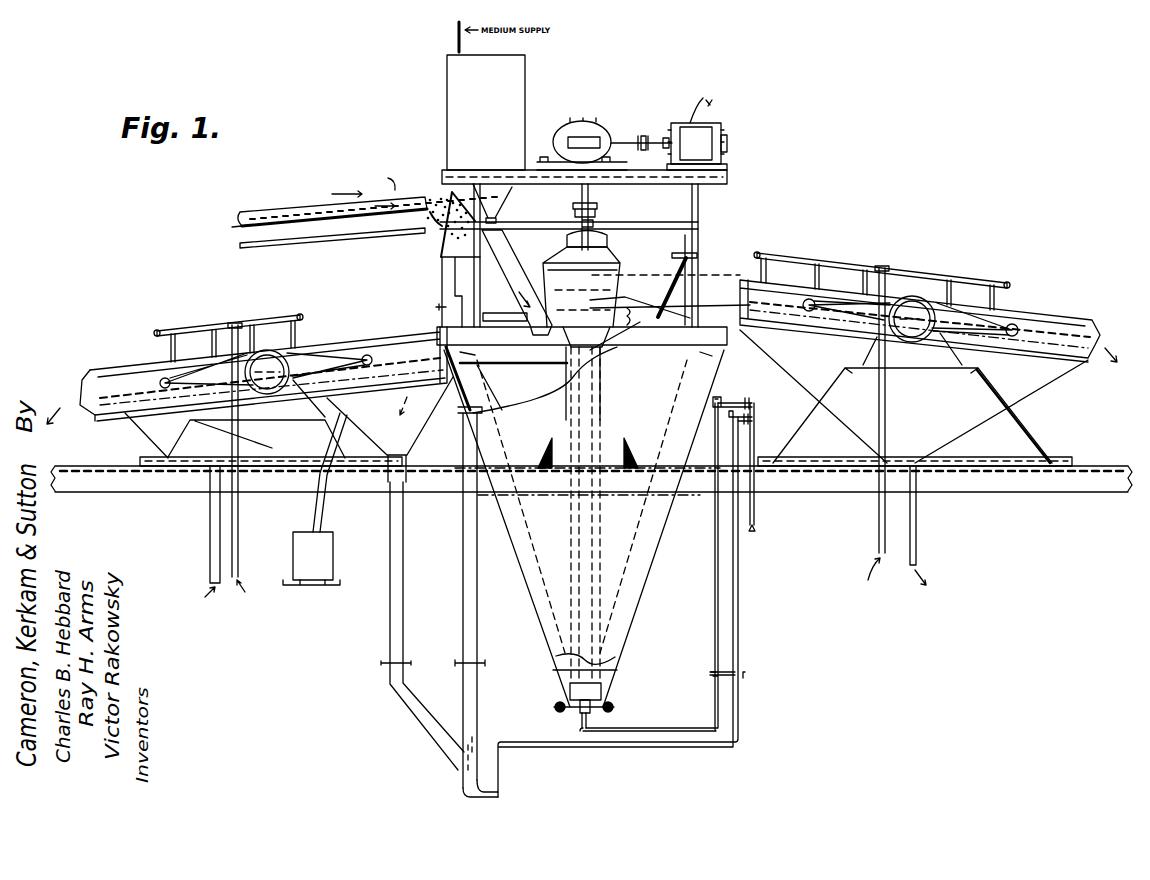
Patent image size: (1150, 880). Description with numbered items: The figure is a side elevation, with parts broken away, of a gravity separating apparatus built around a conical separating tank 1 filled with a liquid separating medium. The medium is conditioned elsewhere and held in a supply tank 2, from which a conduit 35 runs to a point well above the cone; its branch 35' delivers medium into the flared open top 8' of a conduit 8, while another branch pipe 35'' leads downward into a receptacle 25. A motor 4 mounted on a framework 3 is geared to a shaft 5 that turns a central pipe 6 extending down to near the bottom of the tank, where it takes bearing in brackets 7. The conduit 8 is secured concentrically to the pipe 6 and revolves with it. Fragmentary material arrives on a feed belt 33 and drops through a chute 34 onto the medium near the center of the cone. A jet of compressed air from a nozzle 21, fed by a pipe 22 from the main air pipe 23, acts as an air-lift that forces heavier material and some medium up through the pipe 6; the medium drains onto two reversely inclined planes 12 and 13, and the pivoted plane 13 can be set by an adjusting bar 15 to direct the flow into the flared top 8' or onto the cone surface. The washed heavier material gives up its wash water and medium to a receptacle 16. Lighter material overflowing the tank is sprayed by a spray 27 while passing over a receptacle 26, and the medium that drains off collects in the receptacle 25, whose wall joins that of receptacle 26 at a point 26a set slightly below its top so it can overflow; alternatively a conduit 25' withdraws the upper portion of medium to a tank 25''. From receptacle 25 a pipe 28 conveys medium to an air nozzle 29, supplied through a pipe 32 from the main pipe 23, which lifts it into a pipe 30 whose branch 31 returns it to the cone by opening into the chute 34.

The separating tank 1 is at (460, 393).
The source of supply 2 is at (452, 110).
The framework 3 is at (698, 197).
The motor 4 is at (705, 134).
The shaft 5 is at (590, 195).
The pipe 6 is at (592, 247).
The brackets 7 is at (563, 697).
The conduit 8 is at (552, 380).
The flared open top 8' is at (582, 506).
The inclined plane 12 is at (568, 296).
The inclined plane 13 is at (676, 322).
The adjusting bar 15 is at (690, 256).
The receptacle 16 is at (802, 382).
The air jet or nozzle 21 is at (578, 713).
The pipe 22 is at (665, 729).
The main pipe 23 is at (766, 512).
The receptacle 25 is at (390, 429).
The conduit 25' is at (341, 472).
The tank or receptacle 25'' is at (329, 558).
The receptacle 26 is at (269, 430).
The overflow point 26a is at (343, 380).
The spray 27 is at (254, 324).
The pipe 28 is at (402, 563).
The air nozzle or jet 29 is at (460, 773).
The pipe 30 is at (462, 591).
The branch 31 is at (499, 284).
The pipe 32 is at (680, 746).
The feed belt 33 is at (364, 213).
The chute 34 is at (438, 240).
The conduit 35 is at (492, 183).
The branch 35' is at (519, 282).
The branch pipe 35'' is at (441, 292).